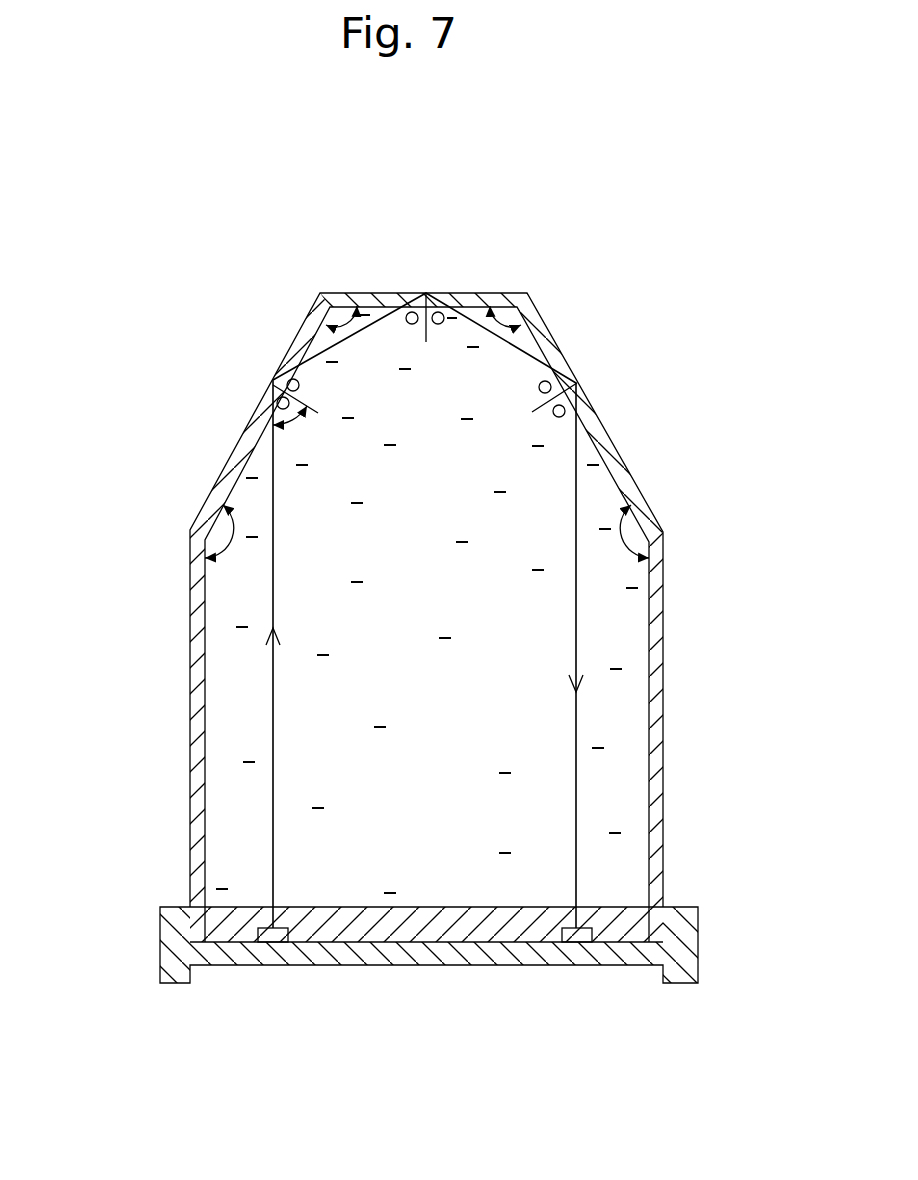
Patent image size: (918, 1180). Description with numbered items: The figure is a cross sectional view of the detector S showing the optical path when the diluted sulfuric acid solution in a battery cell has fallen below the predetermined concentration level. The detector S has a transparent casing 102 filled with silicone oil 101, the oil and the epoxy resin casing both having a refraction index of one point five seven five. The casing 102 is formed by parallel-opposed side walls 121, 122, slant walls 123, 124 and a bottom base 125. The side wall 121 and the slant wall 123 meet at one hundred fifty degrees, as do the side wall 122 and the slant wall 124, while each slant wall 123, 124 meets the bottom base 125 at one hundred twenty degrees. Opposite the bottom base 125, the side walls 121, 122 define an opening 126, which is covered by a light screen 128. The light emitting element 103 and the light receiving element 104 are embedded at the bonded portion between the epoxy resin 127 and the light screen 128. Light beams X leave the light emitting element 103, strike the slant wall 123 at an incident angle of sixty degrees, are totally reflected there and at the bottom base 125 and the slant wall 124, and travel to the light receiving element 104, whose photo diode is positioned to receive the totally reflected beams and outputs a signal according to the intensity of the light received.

The silicone oil 101 is at (437, 698).
The transparent casing 102 is at (663, 590).
The light emitting element 103 is at (277, 933).
The light receiving element 104 is at (553, 963).
The side wall 121 is at (192, 692).
The side wall 122 is at (650, 790).
The slant wall 123 is at (240, 440).
The slant wall 124 is at (576, 383).
The bottom base 125 is at (350, 292).
The opening 126 is at (193, 950).
The epoxy resin 127 is at (612, 925).
The light screen 128 is at (370, 955).
The detector S is at (542, 262).
The light beams X is at (273, 808).